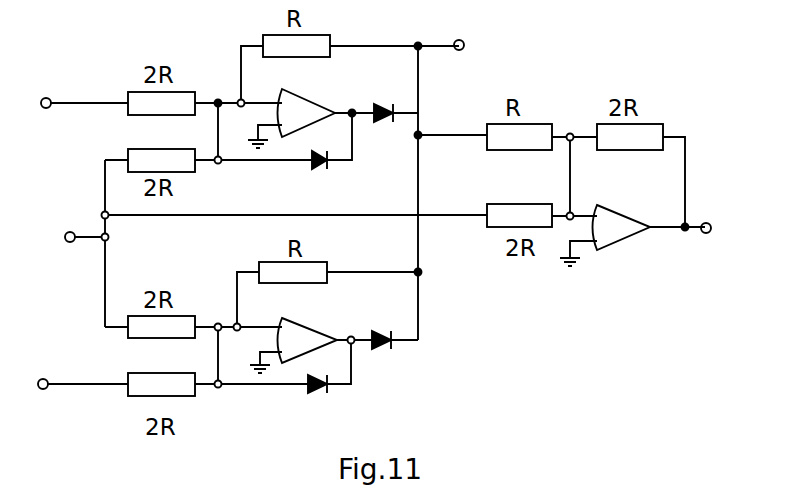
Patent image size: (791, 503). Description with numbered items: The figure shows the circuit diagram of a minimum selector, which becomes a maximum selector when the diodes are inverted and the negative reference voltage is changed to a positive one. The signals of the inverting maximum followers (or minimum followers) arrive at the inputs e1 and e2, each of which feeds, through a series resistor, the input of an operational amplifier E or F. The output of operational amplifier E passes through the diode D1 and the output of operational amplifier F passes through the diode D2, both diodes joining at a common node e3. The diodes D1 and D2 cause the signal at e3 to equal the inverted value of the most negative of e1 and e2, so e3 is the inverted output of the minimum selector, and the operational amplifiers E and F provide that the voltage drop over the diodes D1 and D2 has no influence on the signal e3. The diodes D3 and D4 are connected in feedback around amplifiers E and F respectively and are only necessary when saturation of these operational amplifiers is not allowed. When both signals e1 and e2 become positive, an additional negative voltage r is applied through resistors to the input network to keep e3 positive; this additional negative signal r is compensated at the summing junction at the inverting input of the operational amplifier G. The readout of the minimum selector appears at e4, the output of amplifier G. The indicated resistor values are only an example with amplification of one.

The diode D1 is at (380, 98).
The diode D2 is at (374, 324).
The diode D3 is at (321, 176).
The diode D4 is at (318, 404).
The operational amplifier E is at (307, 113).
The operational amplifier F is at (308, 340).
The operational amplifier G is at (622, 227).
The input e1 is at (52, 123).
The input e2 is at (50, 365).
The inverted output e3 is at (465, 63).
The readout e4 is at (702, 249).
The voltage - r is at (67, 254).